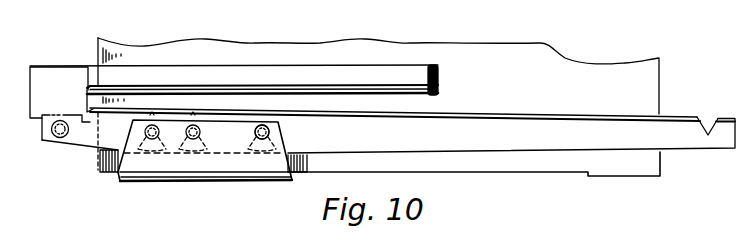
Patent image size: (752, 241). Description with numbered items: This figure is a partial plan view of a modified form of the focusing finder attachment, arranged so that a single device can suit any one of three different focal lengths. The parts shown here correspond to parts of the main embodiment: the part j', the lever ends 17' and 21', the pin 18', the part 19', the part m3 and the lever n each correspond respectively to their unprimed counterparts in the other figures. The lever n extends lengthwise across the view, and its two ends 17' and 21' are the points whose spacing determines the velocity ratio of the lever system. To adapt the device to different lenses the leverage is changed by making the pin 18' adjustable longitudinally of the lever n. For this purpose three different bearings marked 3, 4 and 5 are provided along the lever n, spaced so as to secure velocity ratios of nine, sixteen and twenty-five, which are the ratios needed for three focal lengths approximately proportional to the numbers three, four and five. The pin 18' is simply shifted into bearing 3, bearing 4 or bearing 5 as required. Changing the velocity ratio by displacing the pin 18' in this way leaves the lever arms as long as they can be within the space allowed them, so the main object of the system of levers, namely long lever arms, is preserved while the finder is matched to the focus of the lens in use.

The housing / rail member m3 is at (382, 70).
The stud 18' is at (227, 75).
The bracket with pin 17' is at (71, 148).
The adjusting plate 19' is at (205, 165).
The notch 21' is at (714, 112).
The lower bar j' is at (380, 177).
The bar n is at (568, 142).
The stud position 3 is at (262, 150).
The stud position 4 is at (193, 144).
The stud position 5 is at (152, 144).